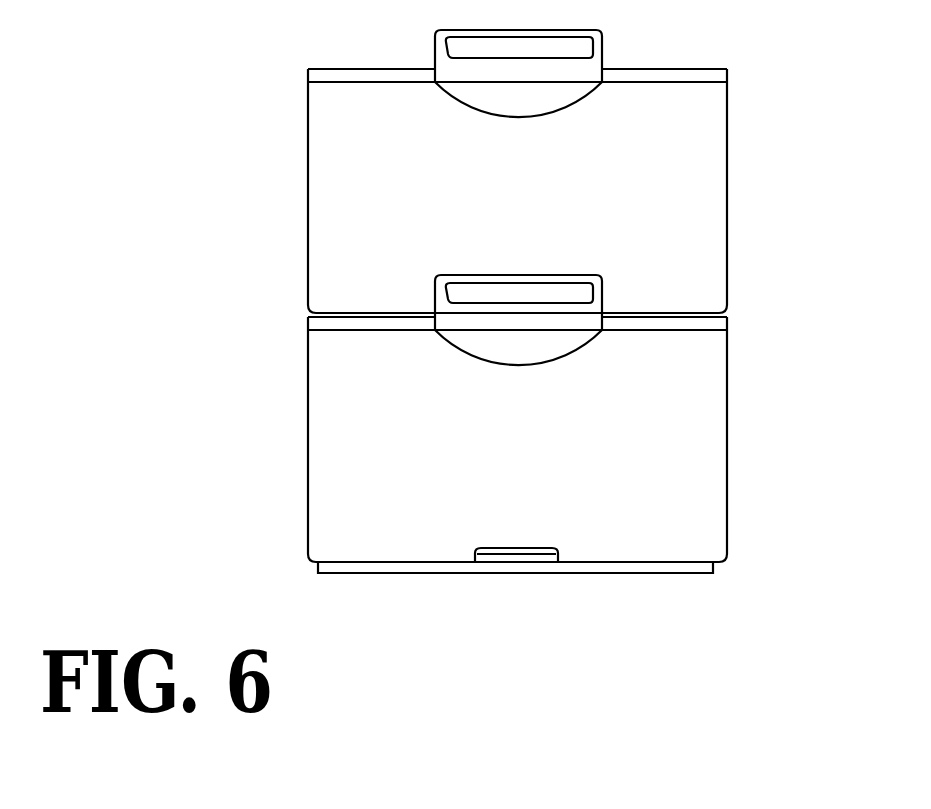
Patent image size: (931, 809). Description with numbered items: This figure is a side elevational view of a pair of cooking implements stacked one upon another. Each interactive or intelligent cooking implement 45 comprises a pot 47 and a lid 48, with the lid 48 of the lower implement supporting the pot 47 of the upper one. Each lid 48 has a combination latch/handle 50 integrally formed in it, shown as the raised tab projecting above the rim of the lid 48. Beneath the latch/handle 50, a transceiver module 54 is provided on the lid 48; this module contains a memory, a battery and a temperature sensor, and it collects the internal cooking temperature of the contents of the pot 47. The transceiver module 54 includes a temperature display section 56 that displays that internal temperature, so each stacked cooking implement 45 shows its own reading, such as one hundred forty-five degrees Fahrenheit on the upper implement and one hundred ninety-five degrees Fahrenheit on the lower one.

The cooking implement 45 is at (575, 292).
The pot 47 is at (727, 252).
The lid 48 is at (697, 70).
The combination latch/handle 50 is at (603, 62).
The transceiver module 54 is at (470, 92).
The temperature display section 56 is at (518, 115).